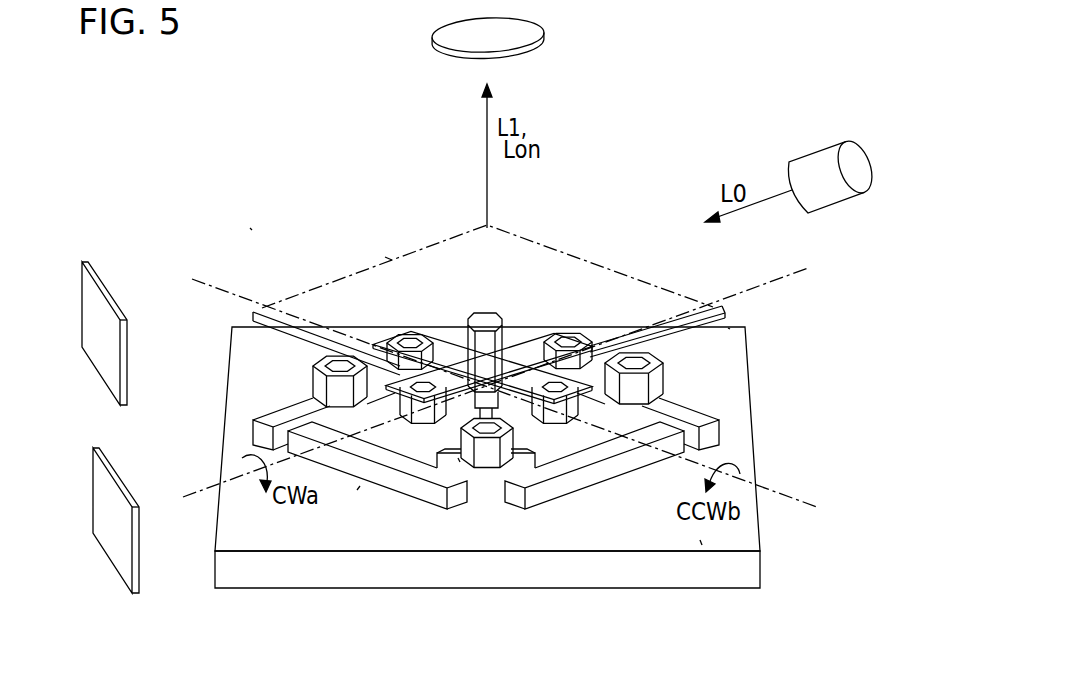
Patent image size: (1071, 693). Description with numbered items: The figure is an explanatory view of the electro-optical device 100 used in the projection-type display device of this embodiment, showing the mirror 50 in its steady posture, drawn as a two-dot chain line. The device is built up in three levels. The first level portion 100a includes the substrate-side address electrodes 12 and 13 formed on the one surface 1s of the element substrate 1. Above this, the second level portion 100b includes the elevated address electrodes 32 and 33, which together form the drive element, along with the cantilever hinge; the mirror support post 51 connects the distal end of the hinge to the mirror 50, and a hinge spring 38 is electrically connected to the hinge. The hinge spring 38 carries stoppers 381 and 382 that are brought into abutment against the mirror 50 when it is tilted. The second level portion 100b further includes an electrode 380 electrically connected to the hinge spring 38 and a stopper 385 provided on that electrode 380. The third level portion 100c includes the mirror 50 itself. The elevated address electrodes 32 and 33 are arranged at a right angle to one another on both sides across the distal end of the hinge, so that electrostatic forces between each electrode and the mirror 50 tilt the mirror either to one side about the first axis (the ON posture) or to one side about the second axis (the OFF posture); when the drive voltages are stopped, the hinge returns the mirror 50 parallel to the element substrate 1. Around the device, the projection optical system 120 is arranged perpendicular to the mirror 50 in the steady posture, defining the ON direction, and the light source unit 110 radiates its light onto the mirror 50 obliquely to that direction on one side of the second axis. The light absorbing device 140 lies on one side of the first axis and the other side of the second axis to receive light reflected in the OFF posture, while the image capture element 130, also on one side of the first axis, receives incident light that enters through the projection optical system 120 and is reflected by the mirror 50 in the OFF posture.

The element substrate 1 is at (742, 575).
The one surface of the element substrate 1s is at (700, 542).
The substrate-side address electrode 12 is at (585, 455).
The substrate-side address electrode 13 is at (350, 457).
The elevated address electrode 32 is at (592, 392).
The elevated address electrode 33 is at (373, 352).
The hinge spring 38 is at (543, 327).
The mirror 50 is at (652, 282).
The mirror support post 51 is at (512, 324).
The electro-optical device 100 is at (252, 230).
The first level portion 100a is at (358, 484).
The second level portion 100b is at (728, 328).
The third level portion 100c is at (390, 255).
The light source unit 110 is at (820, 162).
The projection optical system 120 is at (545, 33).
The image capture element 130 is at (115, 558).
The light absorbing device 140 is at (105, 368).
The electrode 380 is at (458, 458).
The stopper 381 is at (663, 367).
The stopper 382 is at (313, 364).
The stopper 385 is at (486, 452).